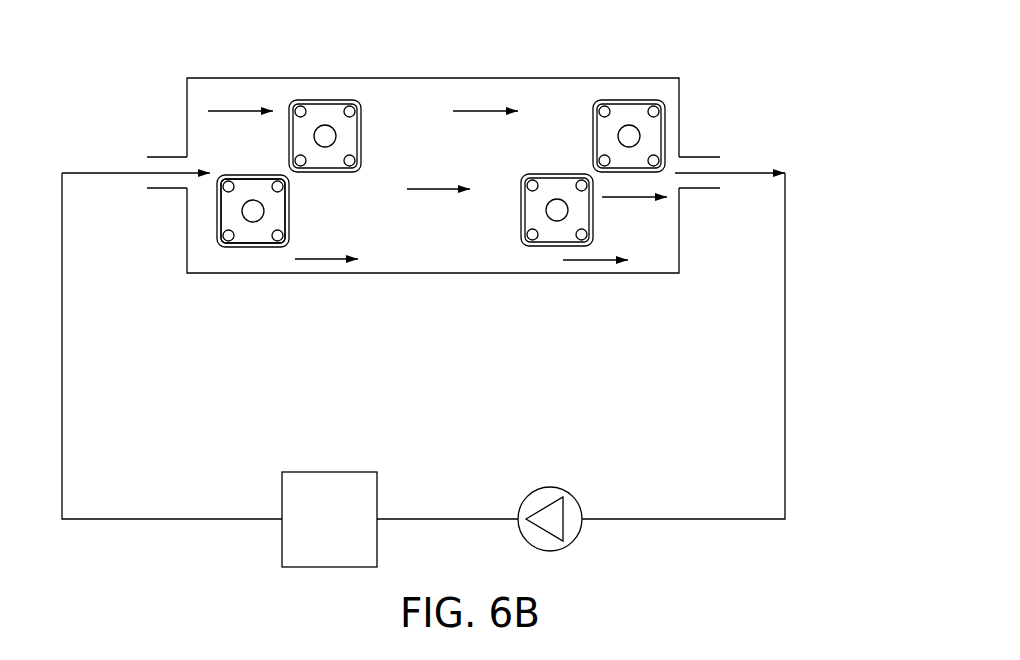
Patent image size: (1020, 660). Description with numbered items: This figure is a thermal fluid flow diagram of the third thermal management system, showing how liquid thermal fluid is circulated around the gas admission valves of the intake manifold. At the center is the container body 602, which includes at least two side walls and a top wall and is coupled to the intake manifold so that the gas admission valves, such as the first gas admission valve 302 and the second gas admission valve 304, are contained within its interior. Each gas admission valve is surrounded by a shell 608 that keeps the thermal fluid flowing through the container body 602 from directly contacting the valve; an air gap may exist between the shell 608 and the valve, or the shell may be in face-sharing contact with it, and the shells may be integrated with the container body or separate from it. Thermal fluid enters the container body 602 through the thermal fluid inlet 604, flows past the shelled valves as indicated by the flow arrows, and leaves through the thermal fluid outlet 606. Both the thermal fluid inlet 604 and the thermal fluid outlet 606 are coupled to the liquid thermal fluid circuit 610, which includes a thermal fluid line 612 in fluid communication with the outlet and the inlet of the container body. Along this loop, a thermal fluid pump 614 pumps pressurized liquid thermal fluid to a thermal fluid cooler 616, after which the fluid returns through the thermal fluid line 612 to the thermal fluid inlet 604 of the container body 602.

The first gas admission valve 302 is at (262, 237).
The second gas admission valve 304 is at (325, 108).
The container body 602 is at (626, 78).
The thermal fluid inlet 604 is at (170, 157).
The thermal fluid outlet 606 is at (697, 157).
The shell 608 is at (246, 247).
The liquid thermal fluid circuit 610 is at (796, 150).
The thermal fluid line 612 is at (680, 519).
The thermal fluid pump 614 is at (545, 488).
The thermal fluid cooler 616 is at (327, 472).